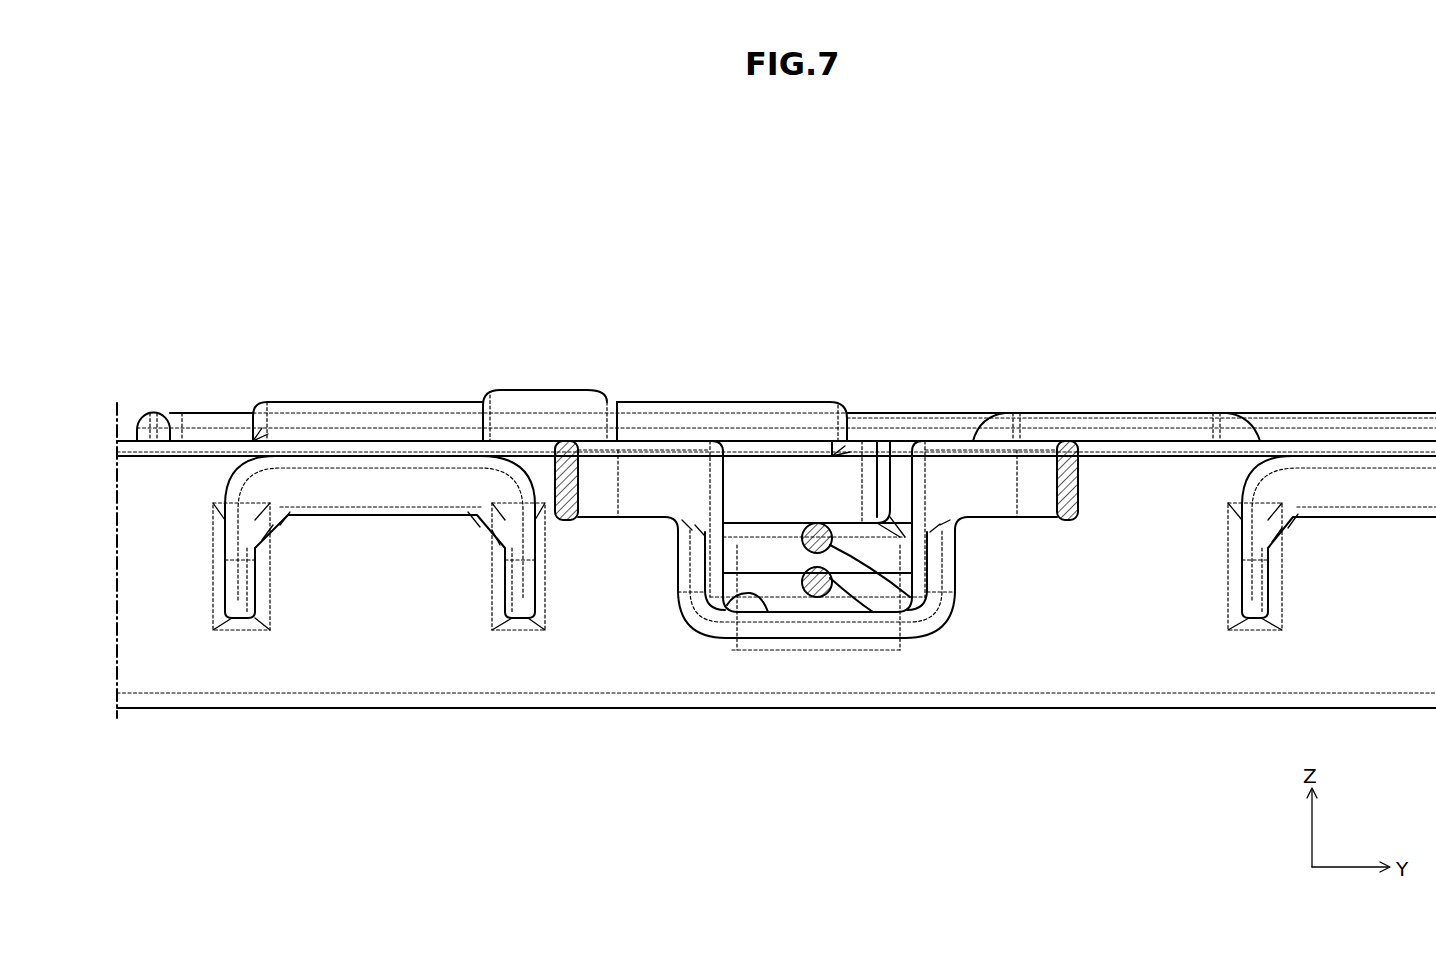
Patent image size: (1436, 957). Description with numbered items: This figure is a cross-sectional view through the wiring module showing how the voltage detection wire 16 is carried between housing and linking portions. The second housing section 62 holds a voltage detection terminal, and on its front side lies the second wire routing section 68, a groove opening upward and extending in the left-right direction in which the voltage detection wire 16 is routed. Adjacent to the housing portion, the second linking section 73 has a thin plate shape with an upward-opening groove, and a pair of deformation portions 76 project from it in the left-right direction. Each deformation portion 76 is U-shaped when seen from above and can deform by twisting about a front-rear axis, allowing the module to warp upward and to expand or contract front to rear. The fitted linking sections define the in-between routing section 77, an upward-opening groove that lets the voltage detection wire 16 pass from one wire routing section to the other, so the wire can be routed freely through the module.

The voltage detection wire 16 is at (885, 602).
The second housing section 62 is at (782, 430).
The second wire routing section 68 is at (873, 548).
The second linking section 73 is at (662, 473).
The deformation portion 76 is at (563, 472).
The in-between routing section 77 is at (725, 597).